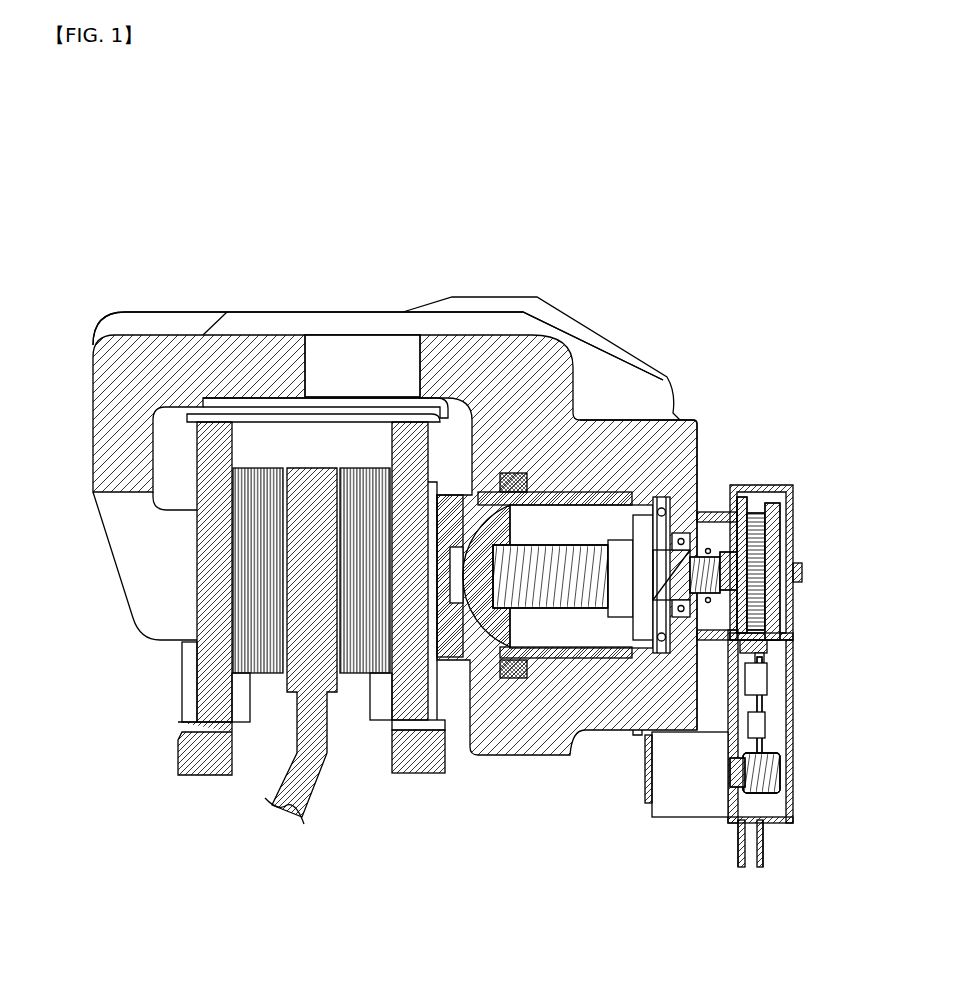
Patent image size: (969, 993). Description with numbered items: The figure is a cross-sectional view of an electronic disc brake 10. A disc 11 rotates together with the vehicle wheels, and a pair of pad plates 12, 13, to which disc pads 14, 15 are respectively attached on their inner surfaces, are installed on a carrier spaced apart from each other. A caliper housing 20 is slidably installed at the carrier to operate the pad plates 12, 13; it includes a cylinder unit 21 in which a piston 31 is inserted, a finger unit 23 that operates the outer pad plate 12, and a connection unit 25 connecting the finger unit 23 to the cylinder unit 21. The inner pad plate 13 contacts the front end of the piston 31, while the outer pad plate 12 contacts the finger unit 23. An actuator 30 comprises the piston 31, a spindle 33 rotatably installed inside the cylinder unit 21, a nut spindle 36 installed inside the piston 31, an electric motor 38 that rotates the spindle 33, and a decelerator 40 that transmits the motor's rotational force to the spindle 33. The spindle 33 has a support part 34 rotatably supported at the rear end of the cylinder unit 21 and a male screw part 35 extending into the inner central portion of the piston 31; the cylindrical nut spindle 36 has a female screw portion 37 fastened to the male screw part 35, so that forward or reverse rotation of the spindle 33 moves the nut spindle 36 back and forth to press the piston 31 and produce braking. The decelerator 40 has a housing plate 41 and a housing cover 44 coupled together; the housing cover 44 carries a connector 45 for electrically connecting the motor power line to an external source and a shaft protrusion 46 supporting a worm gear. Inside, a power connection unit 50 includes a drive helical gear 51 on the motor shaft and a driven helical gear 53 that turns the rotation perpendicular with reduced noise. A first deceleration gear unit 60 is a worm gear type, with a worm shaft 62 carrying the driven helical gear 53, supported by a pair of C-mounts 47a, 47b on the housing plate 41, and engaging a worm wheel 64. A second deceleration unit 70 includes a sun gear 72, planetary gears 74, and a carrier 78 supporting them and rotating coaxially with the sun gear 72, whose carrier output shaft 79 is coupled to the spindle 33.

The electronic disc brake 10 is at (491, 126).
The disc 11 is at (333, 677).
The outer pad plate 12 is at (197, 682).
The inner pad plate 13 is at (405, 708).
The disc pad 14 is at (265, 663).
The disc pad 15 is at (366, 663).
The caliper housing 20 is at (500, 274).
The cylinder unit 21 is at (585, 370).
The finger unit 23 is at (133, 565).
The connection unit 25 is at (245, 345).
The actuator 30 is at (603, 448).
The piston 31 is at (604, 496).
The spindle 33 is at (633, 838).
The support part 34 is at (635, 732).
The male screw part 35 is at (593, 597).
The nut spindle 36 is at (508, 668).
The female screw portion 37 is at (456, 612).
The electric motor 38 is at (687, 805).
The decelerator 40 is at (785, 721).
The housing plate 41 is at (740, 704).
The housing cover 44 is at (793, 755).
The connector 45 is at (770, 860).
The shaft protrusion 46 is at (805, 572).
The C-mount 47a is at (765, 733).
The C-mount 47b is at (762, 680).
The power connection unit 50 is at (848, 782).
The drive helical gear 51 is at (778, 775).
The driven helical gear 53 is at (760, 792).
The first deceleration gear unit 60 is at (805, 641).
The worm shaft 62 is at (765, 658).
The worm wheel 64 is at (790, 633).
The second deceleration unit 70 is at (722, 460).
The sun gear 72 is at (757, 525).
The planetary gears 74 is at (772, 540).
The carrier 78 is at (748, 487).
The carrier output shaft 79 is at (730, 565).